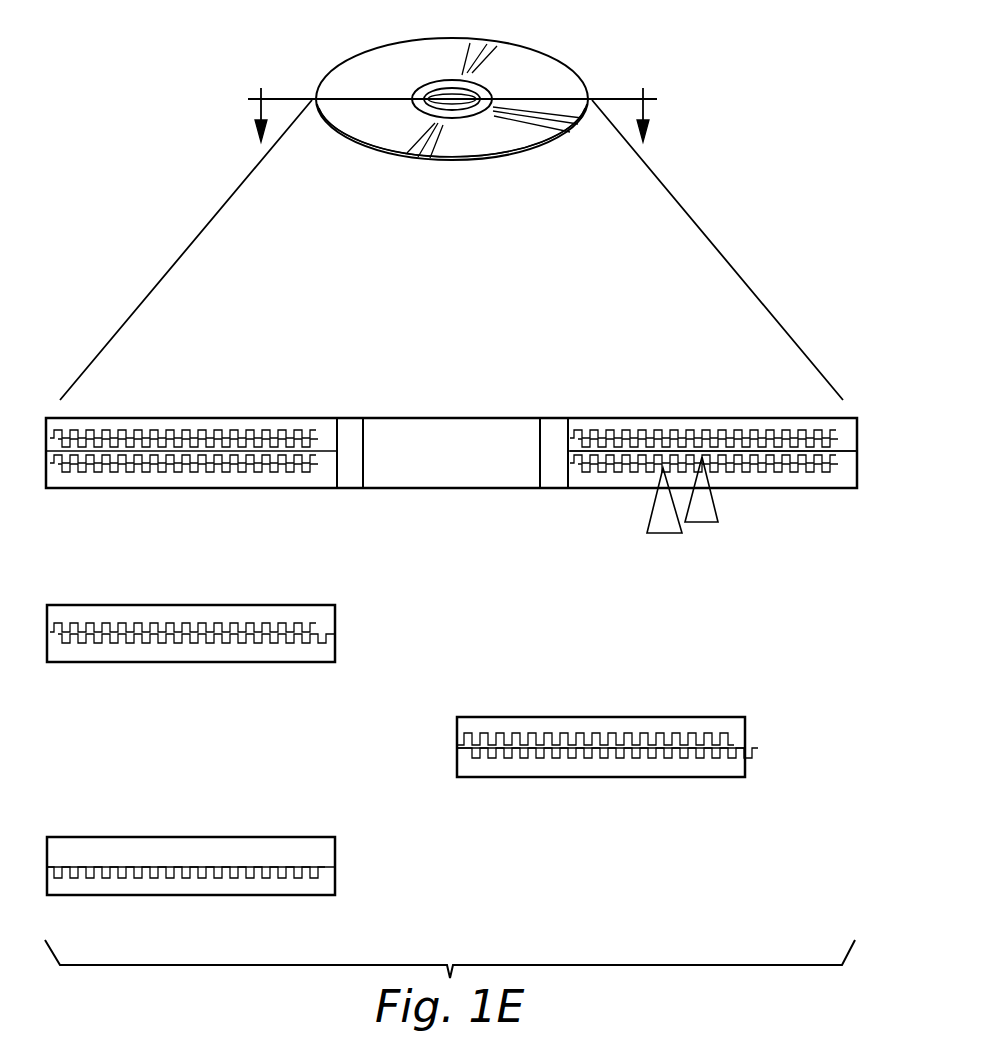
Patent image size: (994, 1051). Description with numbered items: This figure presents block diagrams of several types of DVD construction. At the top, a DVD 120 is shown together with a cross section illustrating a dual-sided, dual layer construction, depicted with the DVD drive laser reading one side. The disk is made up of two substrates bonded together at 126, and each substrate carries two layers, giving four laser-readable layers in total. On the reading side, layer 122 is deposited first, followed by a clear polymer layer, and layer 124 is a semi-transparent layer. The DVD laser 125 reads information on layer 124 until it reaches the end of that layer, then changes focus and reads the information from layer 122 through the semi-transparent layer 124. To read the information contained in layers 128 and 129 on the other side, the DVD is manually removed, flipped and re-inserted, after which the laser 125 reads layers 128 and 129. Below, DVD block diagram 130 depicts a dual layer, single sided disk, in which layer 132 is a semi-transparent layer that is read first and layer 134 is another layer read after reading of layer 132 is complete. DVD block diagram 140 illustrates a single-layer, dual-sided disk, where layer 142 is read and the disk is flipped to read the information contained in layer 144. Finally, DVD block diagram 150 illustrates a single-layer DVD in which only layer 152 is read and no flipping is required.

The DVD 120 is at (545, 68).
The layer 122 is at (737, 472).
The semi-transparent layer 124 is at (608, 472).
The DVD laser 125 is at (665, 535).
The bond 126 is at (813, 452).
The layer 128 is at (687, 430).
The layer 129 is at (798, 447).
The DVD block diagram 130 is at (191, 644).
The semi-transparent layer 132 is at (253, 643).
The layer 134 is at (180, 623).
The DVD block diagram 140 is at (607, 764).
The layer 142 is at (660, 758).
The layer 144 is at (588, 735).
The DVD block diagram 150 is at (191, 891).
The layer 152 is at (253, 878).